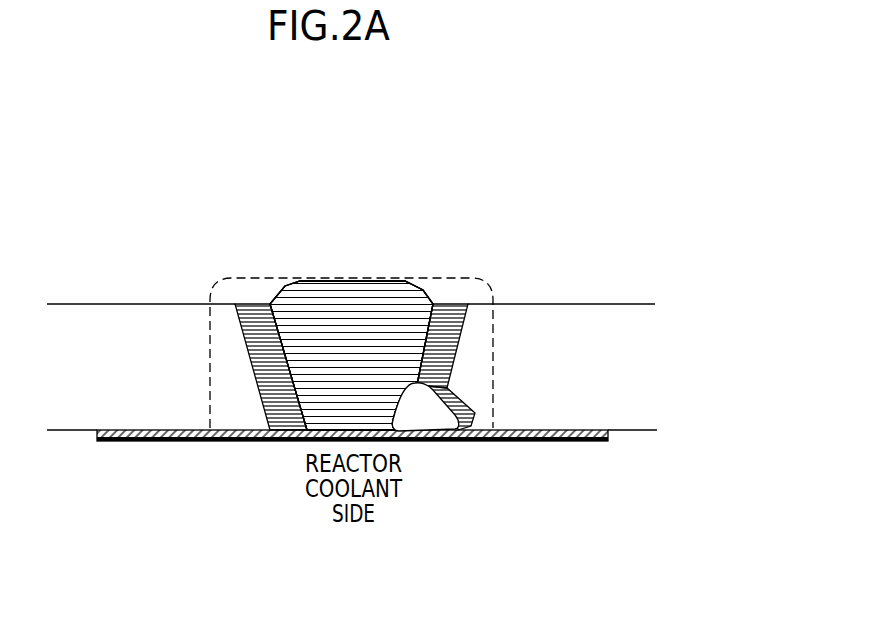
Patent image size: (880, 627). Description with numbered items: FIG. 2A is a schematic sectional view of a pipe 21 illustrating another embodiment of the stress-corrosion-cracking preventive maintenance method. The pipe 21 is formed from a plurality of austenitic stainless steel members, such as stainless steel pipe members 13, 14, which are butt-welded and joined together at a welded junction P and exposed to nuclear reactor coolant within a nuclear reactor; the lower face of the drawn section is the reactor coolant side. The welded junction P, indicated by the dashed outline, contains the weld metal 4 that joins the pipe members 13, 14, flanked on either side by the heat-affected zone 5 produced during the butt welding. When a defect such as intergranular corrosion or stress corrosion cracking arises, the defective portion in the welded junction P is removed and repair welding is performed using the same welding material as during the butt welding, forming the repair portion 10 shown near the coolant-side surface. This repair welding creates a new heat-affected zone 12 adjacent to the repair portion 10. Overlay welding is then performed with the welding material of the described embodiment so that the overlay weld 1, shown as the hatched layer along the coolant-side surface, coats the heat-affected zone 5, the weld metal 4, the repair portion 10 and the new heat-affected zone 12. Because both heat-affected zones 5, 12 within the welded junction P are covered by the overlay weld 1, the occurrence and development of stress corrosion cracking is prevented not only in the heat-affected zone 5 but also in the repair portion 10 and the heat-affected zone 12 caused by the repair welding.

The overlay weld 1 is at (533, 442).
The weld metal 4 is at (380, 279).
The heat-affected zone 5 is at (250, 303).
The repair portion 10 is at (430, 428).
The new heat-affected zone 12 is at (467, 400).
The pipe member 13 is at (140, 312).
The pipe member 14 is at (585, 307).
The pipe 21 is at (462, 299).
The welded junction P is at (490, 290).